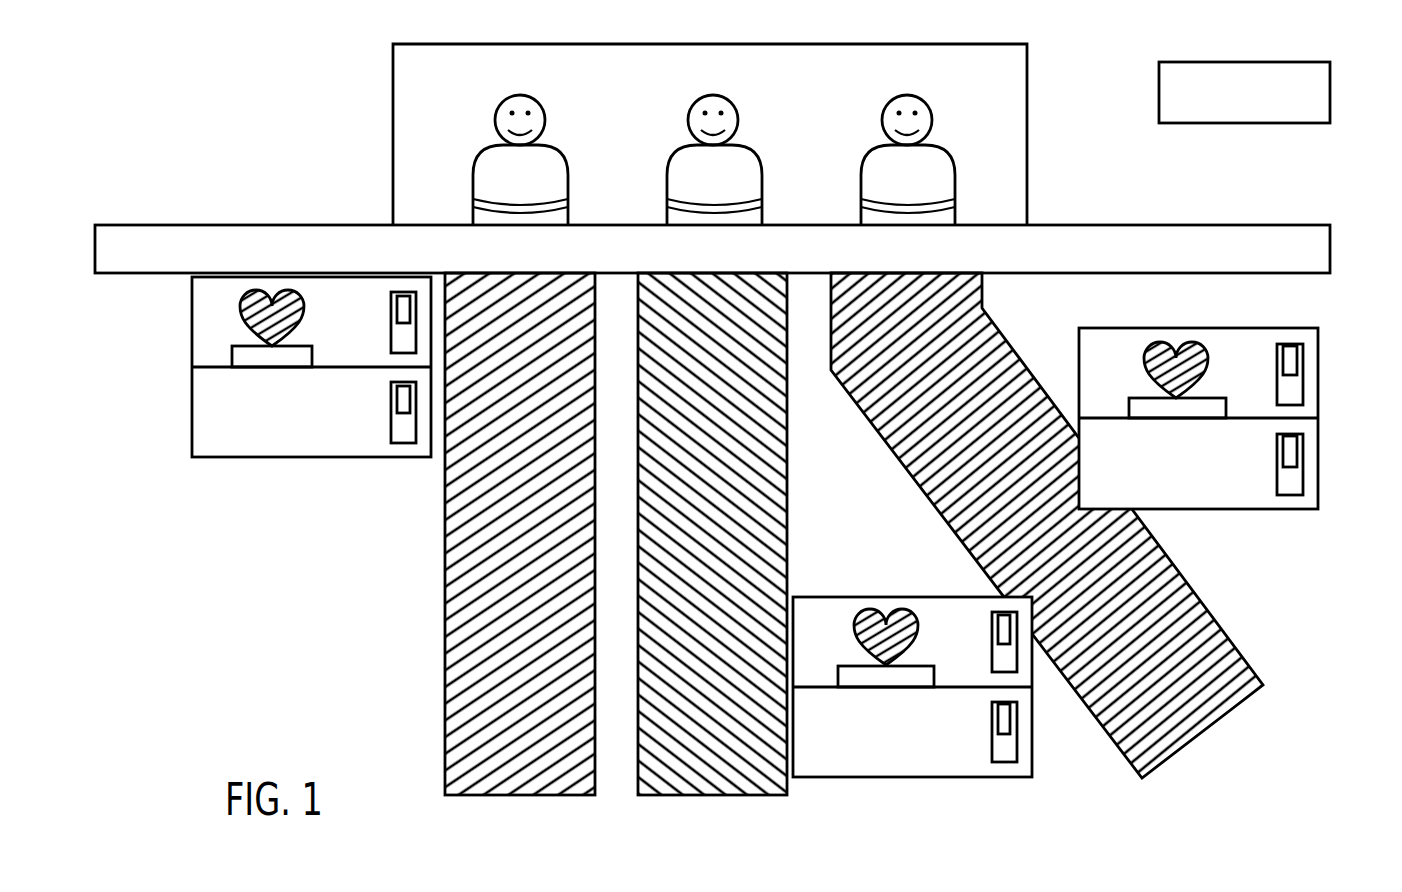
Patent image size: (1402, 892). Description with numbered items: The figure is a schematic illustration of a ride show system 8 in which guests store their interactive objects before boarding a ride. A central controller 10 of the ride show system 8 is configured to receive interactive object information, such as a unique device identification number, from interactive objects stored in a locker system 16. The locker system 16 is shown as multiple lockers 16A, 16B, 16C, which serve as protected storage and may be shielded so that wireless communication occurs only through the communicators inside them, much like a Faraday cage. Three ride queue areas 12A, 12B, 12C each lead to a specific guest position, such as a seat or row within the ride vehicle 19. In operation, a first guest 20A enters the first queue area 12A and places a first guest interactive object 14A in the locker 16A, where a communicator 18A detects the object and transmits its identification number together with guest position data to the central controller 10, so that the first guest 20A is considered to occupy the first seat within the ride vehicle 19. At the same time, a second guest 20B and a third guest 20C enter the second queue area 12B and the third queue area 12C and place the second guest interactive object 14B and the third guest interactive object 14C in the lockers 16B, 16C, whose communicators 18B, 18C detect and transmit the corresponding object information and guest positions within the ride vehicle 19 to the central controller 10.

The ride show system 8 is at (262, 89).
The central controller 10 is at (1245, 62).
The ride vehicle 19 is at (1027, 89).
The first guest 20A is at (474, 160).
The second guest 20B is at (668, 160).
The third guest 20C is at (862, 160).
The first ride queue area 12A is at (445, 663).
The second ride queue area 12B is at (787, 455).
The third ride queue area 12C is at (1164, 550).
The locker system 16 is at (743, 527).
The first locker 16A is at (274, 367).
The second locker 16B is at (939, 658).
The third locker 16C is at (1227, 396).
The first guest interactive object 14A is at (245, 313).
The second guest interactive object 14B is at (870, 622).
The third guest interactive object 14C is at (1148, 360).
The communicator 18A is at (277, 358).
The communicator 18B is at (887, 676).
The communicator 18C is at (1147, 413).